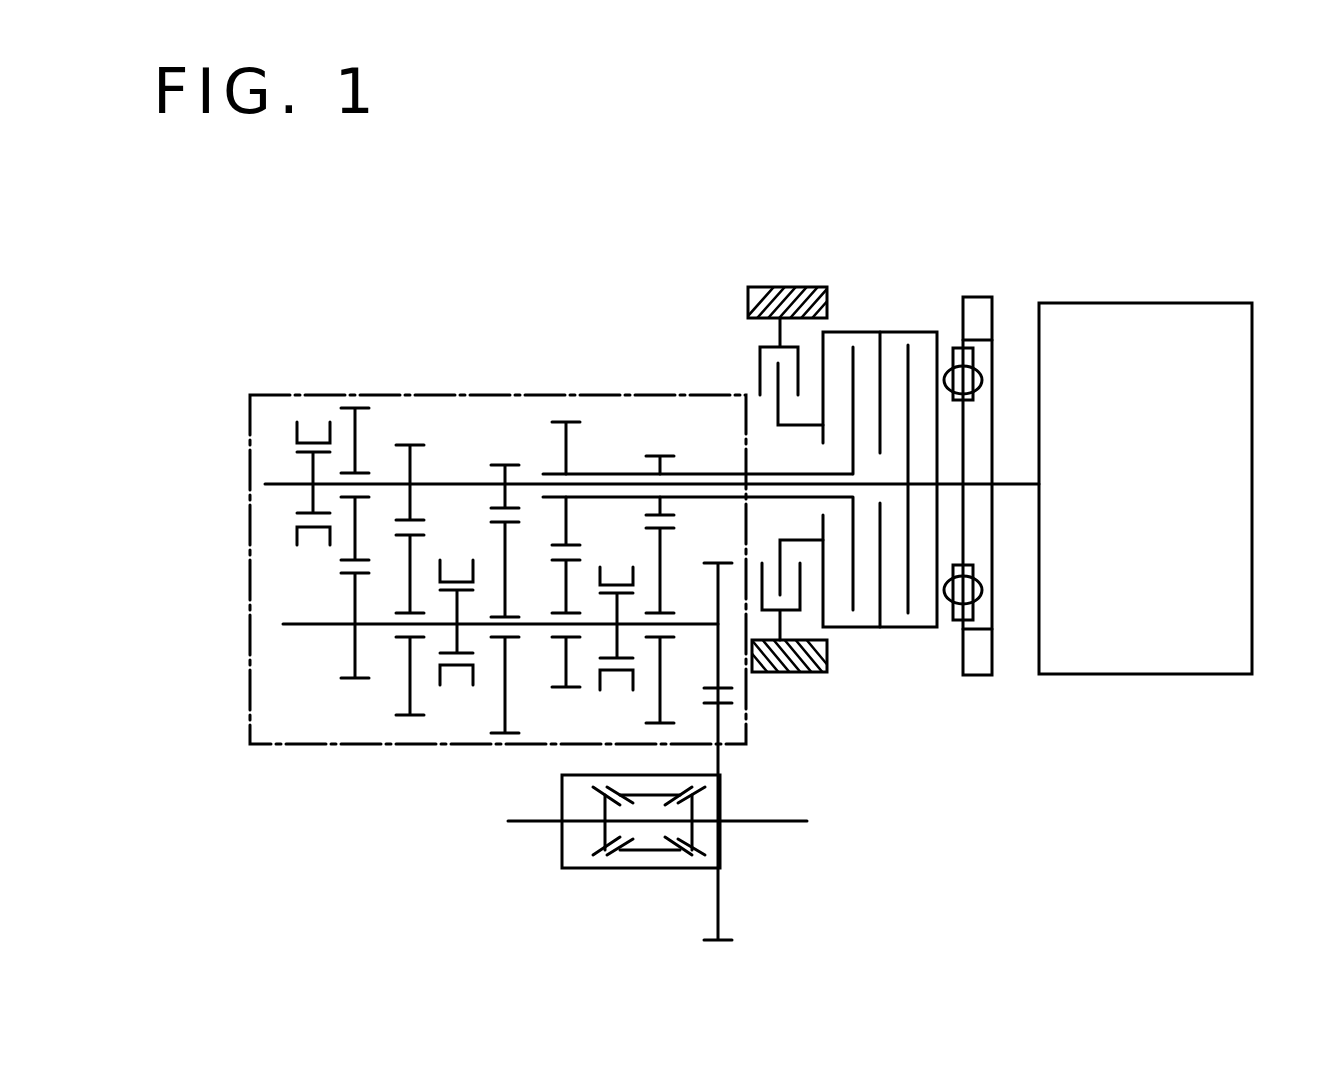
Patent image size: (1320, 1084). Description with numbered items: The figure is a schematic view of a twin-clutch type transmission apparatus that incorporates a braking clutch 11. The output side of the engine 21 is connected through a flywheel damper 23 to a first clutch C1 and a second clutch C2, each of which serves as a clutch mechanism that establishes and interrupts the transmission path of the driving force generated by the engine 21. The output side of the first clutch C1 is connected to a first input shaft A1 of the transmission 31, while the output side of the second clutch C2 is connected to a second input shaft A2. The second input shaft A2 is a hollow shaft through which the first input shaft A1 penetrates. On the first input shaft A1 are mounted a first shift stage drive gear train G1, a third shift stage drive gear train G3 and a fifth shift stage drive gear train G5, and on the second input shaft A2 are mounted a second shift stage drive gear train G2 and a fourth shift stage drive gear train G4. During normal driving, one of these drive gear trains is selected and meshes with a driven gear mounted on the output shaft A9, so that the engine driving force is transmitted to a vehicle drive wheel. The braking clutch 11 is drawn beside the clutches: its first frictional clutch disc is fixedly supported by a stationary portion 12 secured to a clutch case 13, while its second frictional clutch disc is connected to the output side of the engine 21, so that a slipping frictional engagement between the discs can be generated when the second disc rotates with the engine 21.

The transmission 31 is at (290, 395).
The first input shaft A1 is at (278, 484).
The output shaft A9 is at (290, 623).
The second input shaft A2 is at (550, 470).
The fifth shift stage drive gear train G5 is at (350, 395).
The third shift stage drive gear train G3 is at (412, 443).
The first shift stage drive gear train G1 is at (502, 462).
The fourth shift stage drive gear train G4 is at (565, 418).
The second shift stage drive gear train G2 is at (657, 454).
The braking clutch 11 is at (742, 437).
The stationary portion 12 is at (778, 338).
The clutch case 13 is at (786, 312).
The second clutch C2 is at (853, 352).
The first clutch C1 is at (908, 352).
The flywheel damper 23 is at (976, 312).
The engine 21 is at (1122, 323).